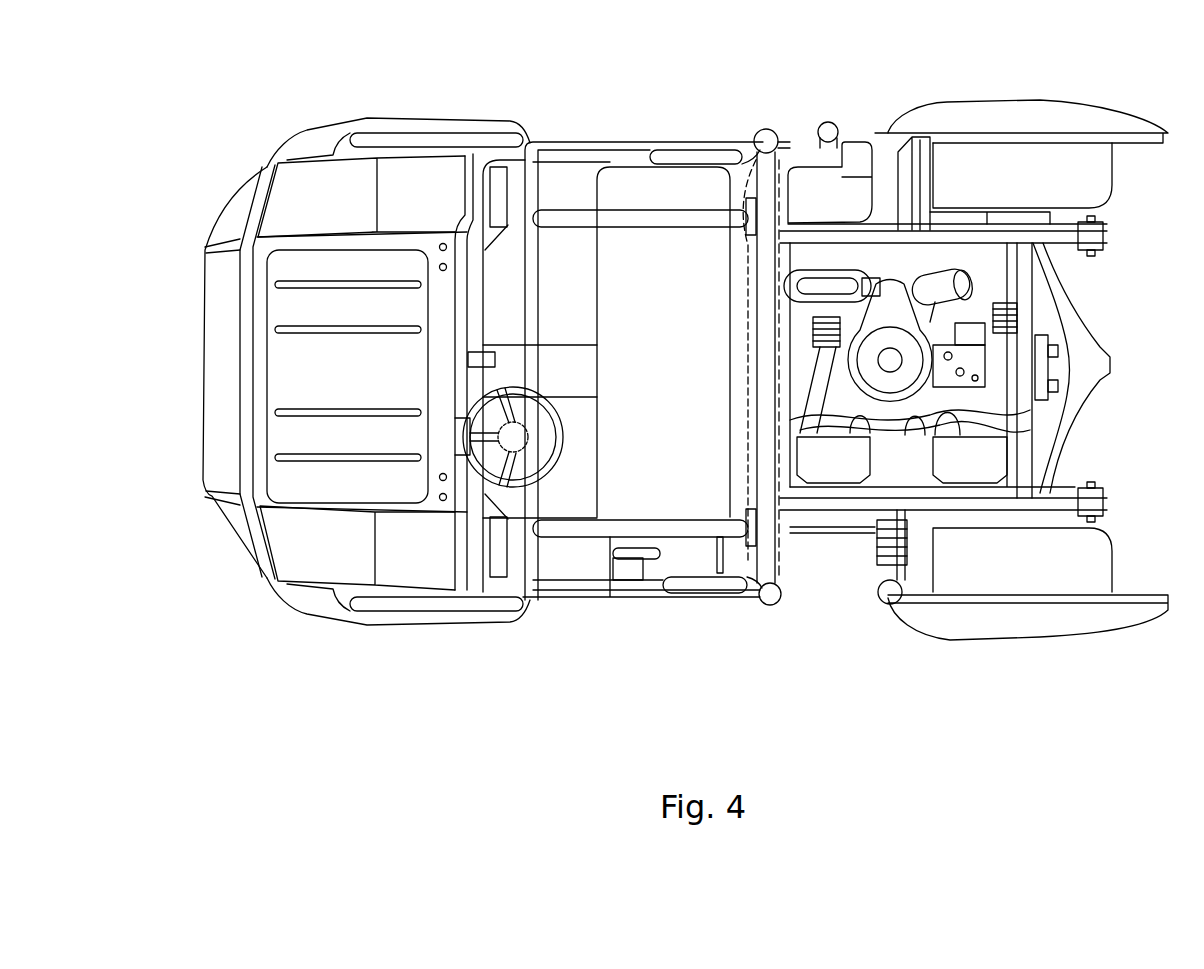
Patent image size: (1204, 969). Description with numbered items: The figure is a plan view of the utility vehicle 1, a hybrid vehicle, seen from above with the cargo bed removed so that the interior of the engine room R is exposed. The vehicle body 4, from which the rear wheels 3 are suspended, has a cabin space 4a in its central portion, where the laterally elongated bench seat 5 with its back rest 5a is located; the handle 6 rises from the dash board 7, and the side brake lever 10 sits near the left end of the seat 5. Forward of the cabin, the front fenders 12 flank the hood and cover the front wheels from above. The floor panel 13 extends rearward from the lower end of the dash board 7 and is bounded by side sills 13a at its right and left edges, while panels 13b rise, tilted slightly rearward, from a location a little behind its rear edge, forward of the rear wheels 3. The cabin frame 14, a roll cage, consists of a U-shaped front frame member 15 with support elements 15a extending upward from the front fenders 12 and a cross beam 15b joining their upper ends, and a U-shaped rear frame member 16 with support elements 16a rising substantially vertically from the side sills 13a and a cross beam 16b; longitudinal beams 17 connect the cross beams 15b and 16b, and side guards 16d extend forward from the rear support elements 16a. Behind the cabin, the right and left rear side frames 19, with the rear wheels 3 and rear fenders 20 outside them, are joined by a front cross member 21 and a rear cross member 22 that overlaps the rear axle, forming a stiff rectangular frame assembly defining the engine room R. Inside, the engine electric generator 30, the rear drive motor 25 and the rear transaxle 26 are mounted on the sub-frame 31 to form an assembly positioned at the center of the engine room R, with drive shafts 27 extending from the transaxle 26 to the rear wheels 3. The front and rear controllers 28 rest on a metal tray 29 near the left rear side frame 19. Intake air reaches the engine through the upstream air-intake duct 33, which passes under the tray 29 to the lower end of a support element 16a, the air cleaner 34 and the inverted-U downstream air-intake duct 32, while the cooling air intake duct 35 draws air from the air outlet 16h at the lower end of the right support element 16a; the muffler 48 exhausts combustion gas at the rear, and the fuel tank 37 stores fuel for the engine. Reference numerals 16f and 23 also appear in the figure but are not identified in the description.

The utility vehicle 1 is at (212, 133).
The rear wheels 3 is at (1103, 178).
The vehicle body 4 is at (600, 138).
The cabin space 4a is at (577, 145).
The bench seat 5 is at (635, 142).
The back rest 5a is at (741, 148).
The handle 6 is at (565, 441).
The dash board 7 is at (473, 293).
The side brake lever 10 is at (627, 560).
The front fenders 12 is at (407, 127).
The floor panel 13 is at (562, 565).
The side sills 13a is at (593, 597).
The panels 13b is at (945, 180).
The cabin frame 14 is at (528, 140).
The front frame member 15 is at (533, 310).
The support elements 15a is at (487, 133).
The cross beam 15b is at (532, 268).
The rear frame member 16 is at (757, 307).
The support elements 16a is at (768, 130).
The cross beam 16b is at (763, 375).
The side guards 16d is at (696, 143).
The partition line 16f is at (790, 585).
The air outlet 16h is at (798, 145).
The longitudinal beams 17 is at (685, 218).
The rear side frames 19 is at (1110, 235).
The rear fenders 20 is at (1013, 115).
The cross member 21 is at (778, 357).
The cross member 22 is at (1027, 307).
The suspension arm 23 is at (1067, 250).
The rear drive motor 25 is at (1030, 437).
The rear transaxle 26 is at (977, 363).
The drive shafts 27 is at (1030, 272).
The controllers 28 is at (833, 467).
The tray 29 is at (915, 465).
The engine electric generator 30 is at (905, 287).
The sub-frame 31 is at (1047, 343).
The downstream air-intake duct 32 is at (843, 287).
The upstream air-intake duct 33 is at (803, 413).
The air cleaner 34 is at (790, 307).
The cooling air intake duct 35 is at (803, 252).
The fuel tank 37 is at (835, 128).
The muffler 48 is at (975, 270).
The engine room R is at (960, 254).